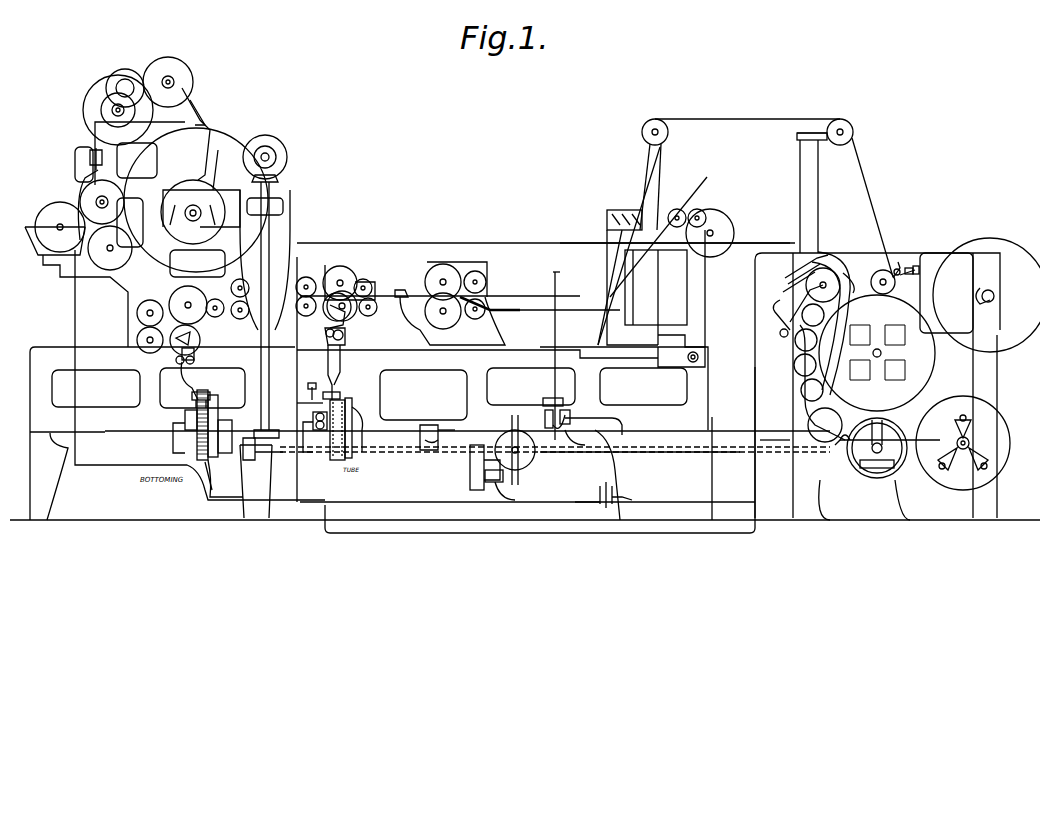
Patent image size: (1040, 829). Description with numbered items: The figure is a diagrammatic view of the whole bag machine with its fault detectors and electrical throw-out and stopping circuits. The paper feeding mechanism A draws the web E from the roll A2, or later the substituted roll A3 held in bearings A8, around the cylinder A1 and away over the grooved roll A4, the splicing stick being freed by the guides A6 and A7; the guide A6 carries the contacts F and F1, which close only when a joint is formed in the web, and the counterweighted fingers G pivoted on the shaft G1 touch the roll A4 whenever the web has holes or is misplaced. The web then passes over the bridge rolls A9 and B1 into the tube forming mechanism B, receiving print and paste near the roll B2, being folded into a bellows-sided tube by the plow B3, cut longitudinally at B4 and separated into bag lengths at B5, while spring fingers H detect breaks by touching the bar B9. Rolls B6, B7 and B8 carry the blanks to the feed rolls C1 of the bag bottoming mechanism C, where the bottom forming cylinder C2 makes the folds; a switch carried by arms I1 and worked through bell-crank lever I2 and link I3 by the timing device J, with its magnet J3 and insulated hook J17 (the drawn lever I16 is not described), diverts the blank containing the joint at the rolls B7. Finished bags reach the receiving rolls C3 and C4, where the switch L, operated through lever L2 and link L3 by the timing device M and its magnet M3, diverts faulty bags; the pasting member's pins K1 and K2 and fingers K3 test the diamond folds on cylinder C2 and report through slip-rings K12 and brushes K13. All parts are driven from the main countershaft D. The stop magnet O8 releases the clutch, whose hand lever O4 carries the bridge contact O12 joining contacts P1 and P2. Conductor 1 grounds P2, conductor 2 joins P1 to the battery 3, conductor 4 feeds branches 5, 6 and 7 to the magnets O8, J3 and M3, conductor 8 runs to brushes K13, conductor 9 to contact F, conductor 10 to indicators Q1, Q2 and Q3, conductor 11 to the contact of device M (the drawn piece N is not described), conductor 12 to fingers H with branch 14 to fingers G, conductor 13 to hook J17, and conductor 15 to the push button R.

The sliding finger K1 is at (100, 110).
The slip-rings K12 is at (95, 170).
The brushes K13 is at (125, 150).
The sliding finger K2 is at (105, 190).
The resilient finger K3 is at (118, 178).
The bag bottoming mechanism C is at (191, 118).
The feed rolls C1 is at (272, 326).
The bottom forming cylinder C2 is at (225, 140).
The lower receiving roll C3 is at (178, 297).
The receiving roll C4 is at (137, 316).
The shunting device or switch L is at (177, 342).
The lever L2 is at (195, 350).
The link L3 is at (192, 382).
The timing device M is at (192, 396).
The electromagnet M3 is at (185, 418).
The gear N is at (218, 405).
The arms I1 is at (325, 314).
The bell-crank lever I2 is at (348, 335).
The link I3 is at (335, 375).
The arm I16 is at (305, 390).
The insulated spring engaging hook J17 is at (334, 392).
The electromagnet J3 is at (300, 407).
The timing device J is at (342, 425).
The tube forming mechanism B is at (440, 258).
The bridge roll B1 is at (660, 125).
The roll B2 is at (692, 215).
The plow or former B3 is at (560, 290).
The longitudinal cutting station B4 is at (478, 298).
The separating station B5 is at (450, 303).
The roll B6 is at (370, 280).
The roll B7 is at (340, 275).
The roll B8 is at (312, 275).
The bar B9 is at (455, 295).
The spring fingers H is at (505, 305).
The electrical indicator Q1 is at (605, 224).
The electrical indicator Q2 is at (610, 214).
The electrical indicator Q3 is at (658, 237).
The contact P1 is at (570, 415).
The contact P2 is at (587, 386).
The operating hand lever O4 is at (545, 391).
The electromagnet O8 is at (510, 495).
The bridge contact O12 is at (583, 438).
The push button R is at (698, 355).
The main countershaft D is at (640, 455).
The paper feeding mechanism A is at (877, 371).
The cylinder A1 is at (885, 330).
The paper roll A2 is at (990, 322).
The paper roll A3 is at (915, 448).
The roll A4 is at (870, 270).
The guide A6 is at (830, 255).
The guide A7 is at (790, 320).
The bearings A8 is at (990, 290).
The bridge roll A9 is at (845, 128).
The web of paper E is at (875, 187).
The contact F is at (801, 269).
The contact F1 is at (788, 282).
The pivoted fingers G is at (898, 280).
The shaft G1 is at (902, 270).
The conductor 1 is at (549, 419).
The conductor 2 is at (625, 425).
The battery or source of current 3 is at (606, 495).
The conductor 4 is at (431, 488).
The branch conductor 5 is at (520, 482).
The branch conductor 6 is at (297, 470).
The branch conductor 7 is at (210, 492).
The conductor 8 is at (72, 313).
The conductor 9 is at (400, 533).
The conductor 10 is at (663, 298).
The conductor 11 is at (432, 243).
The conductor 12 is at (545, 315).
The conductor 13 is at (585, 325).
The branch conductor 14 is at (677, 233).
The conductor 15 is at (690, 340).